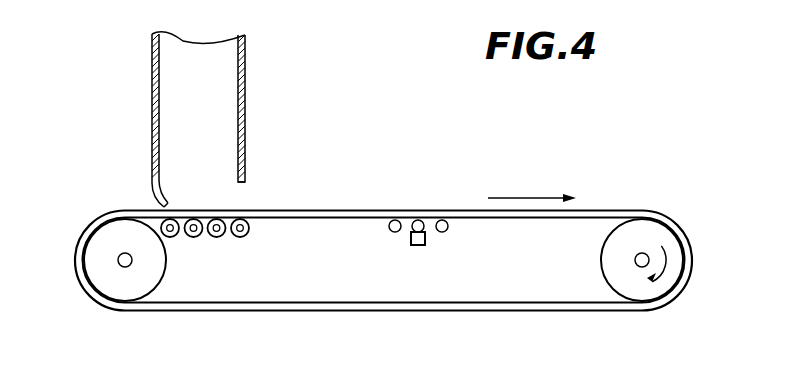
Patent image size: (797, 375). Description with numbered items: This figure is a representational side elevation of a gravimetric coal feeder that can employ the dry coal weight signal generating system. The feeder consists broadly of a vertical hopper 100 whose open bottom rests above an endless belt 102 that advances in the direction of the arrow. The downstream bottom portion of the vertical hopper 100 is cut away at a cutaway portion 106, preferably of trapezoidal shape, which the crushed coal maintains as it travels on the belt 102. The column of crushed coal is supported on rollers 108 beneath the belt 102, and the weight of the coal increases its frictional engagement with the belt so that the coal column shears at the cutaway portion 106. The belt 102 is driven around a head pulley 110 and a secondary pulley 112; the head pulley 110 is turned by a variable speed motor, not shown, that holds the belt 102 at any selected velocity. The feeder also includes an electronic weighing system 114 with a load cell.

The vertical hopper 100 is at (245, 107).
The endless belt 102 is at (463, 301).
The cutaway portion 106 is at (242, 183).
The rollers 108 is at (175, 237).
The head pulley 110 is at (667, 243).
The secondary pulley 112 is at (107, 278).
The electronic weighing system 114 is at (431, 205).